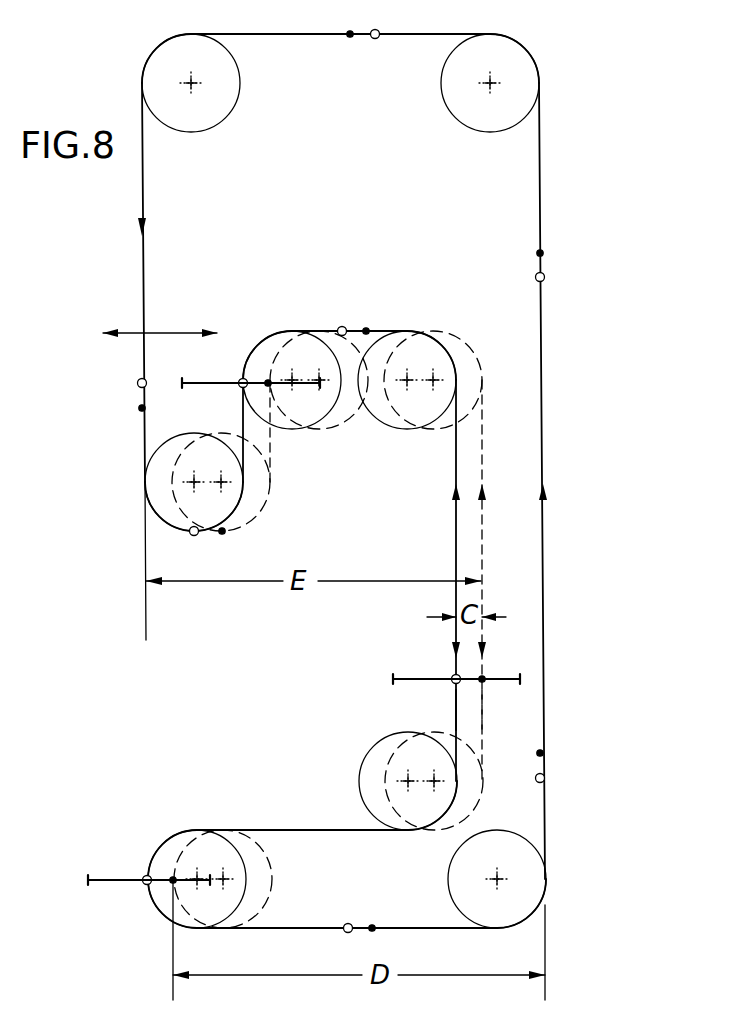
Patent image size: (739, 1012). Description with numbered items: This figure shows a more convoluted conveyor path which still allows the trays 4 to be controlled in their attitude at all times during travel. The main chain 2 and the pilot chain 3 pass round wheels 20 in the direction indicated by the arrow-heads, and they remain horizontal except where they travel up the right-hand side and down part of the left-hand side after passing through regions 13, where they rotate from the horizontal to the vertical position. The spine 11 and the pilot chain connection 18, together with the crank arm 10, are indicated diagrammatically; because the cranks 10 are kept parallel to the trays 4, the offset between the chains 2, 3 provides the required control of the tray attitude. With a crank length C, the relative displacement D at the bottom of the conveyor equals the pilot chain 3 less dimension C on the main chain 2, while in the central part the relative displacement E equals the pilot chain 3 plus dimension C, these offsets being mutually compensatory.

The main chain 2 is at (455, 706).
The pilot chain 3 is at (483, 706).
The tray 4 is at (196, 382).
The crank arm 10 is at (258, 381).
The spine 11 is at (374, 40).
The region 13 is at (132, 73).
The pilot chain connection 18 is at (542, 252).
The wheel 20 is at (227, 108).